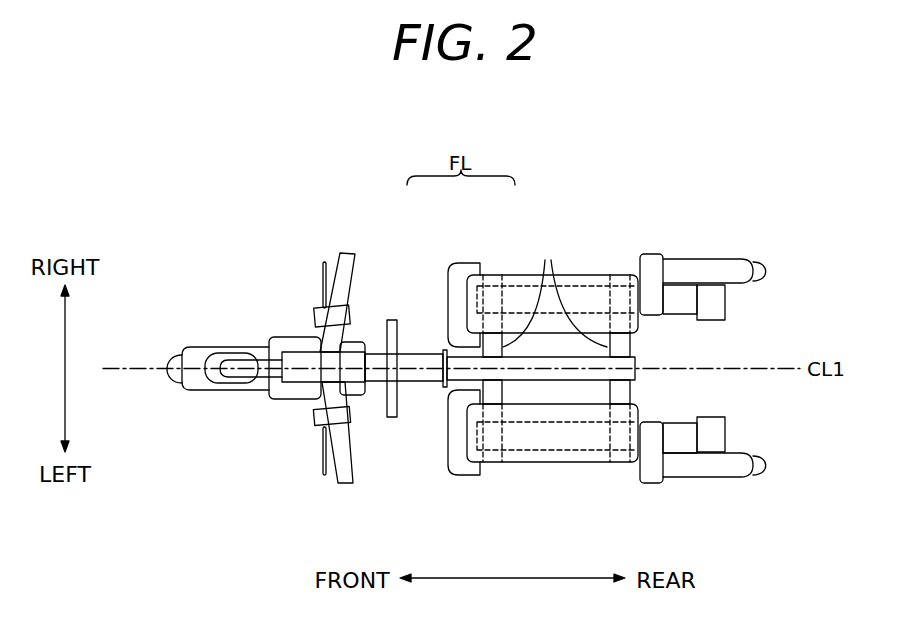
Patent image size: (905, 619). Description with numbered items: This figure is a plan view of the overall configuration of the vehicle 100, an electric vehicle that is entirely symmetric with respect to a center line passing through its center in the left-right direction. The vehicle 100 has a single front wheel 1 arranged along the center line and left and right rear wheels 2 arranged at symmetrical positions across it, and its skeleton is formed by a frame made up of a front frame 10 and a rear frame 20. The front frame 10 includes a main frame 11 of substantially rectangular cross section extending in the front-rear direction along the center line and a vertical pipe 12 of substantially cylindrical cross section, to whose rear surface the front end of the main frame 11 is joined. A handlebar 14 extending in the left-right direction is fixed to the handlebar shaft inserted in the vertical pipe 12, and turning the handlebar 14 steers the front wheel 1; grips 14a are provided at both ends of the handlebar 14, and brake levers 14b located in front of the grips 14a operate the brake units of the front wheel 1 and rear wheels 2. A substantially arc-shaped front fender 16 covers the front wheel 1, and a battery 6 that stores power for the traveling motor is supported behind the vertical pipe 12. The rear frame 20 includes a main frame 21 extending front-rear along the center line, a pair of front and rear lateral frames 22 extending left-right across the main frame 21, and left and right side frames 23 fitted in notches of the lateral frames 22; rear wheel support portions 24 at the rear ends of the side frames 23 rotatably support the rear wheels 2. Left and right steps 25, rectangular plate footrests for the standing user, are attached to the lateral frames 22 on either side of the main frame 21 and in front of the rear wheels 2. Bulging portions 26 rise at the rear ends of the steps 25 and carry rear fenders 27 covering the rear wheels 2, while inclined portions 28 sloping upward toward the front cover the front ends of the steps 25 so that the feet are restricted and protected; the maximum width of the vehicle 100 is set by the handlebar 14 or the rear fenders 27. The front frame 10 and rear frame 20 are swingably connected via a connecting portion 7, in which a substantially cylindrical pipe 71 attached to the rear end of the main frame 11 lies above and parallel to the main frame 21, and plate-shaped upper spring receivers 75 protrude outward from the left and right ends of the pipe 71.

The vehicle 100 is at (646, 182).
The front frame 10 is at (402, 250).
The rear frame 20 is at (517, 250).
The front wheel 1 is at (170, 384).
The rear wheels 2 is at (766, 270).
The battery 6 is at (357, 338).
The connecting portion 7 is at (408, 344).
The pipe 71 is at (420, 383).
The upper spring receivers 75 is at (389, 418).
The main frame 11 is at (366, 342).
The vertical pipe 12 is at (259, 383).
The handlebar 14 is at (362, 480).
The grips 14a is at (344, 256).
The brake levers 14b is at (322, 268).
The front fender 16 is at (210, 347).
The main frame 21 is at (528, 381).
The lateral frames 22 is at (555, 292).
The side frames 23 is at (680, 422).
The rear wheel support portions 24 is at (726, 299).
The steps 25 is at (594, 275).
The bulging portions 26 is at (652, 255).
The rear fenders 27 is at (711, 259).
The inclined portions 28 is at (448, 287).